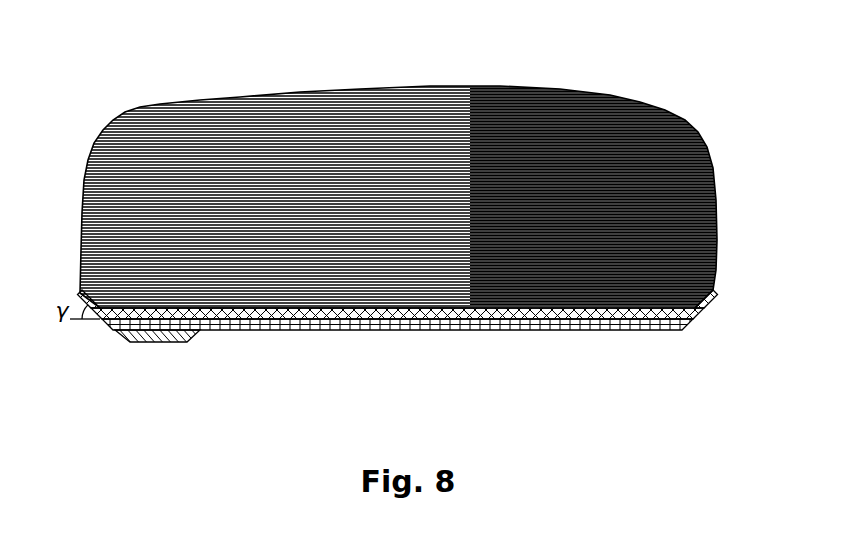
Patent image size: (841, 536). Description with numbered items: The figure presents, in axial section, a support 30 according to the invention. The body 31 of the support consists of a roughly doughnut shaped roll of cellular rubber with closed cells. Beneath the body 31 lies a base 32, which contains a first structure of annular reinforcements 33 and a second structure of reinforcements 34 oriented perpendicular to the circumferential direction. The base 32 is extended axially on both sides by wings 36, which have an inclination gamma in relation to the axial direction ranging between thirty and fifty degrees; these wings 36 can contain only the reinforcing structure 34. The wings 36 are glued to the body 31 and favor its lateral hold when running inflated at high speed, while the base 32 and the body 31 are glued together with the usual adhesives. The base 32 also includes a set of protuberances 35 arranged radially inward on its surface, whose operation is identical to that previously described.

The support 30 is at (716, 86).
The body 31 is at (337, 173).
The base 32 is at (578, 342).
The first structure of annular reinforcements 33 is at (238, 327).
The second structure of reinforcements 34 is at (383, 317).
The protuberances 35 is at (155, 338).
The wings 36 is at (82, 293).